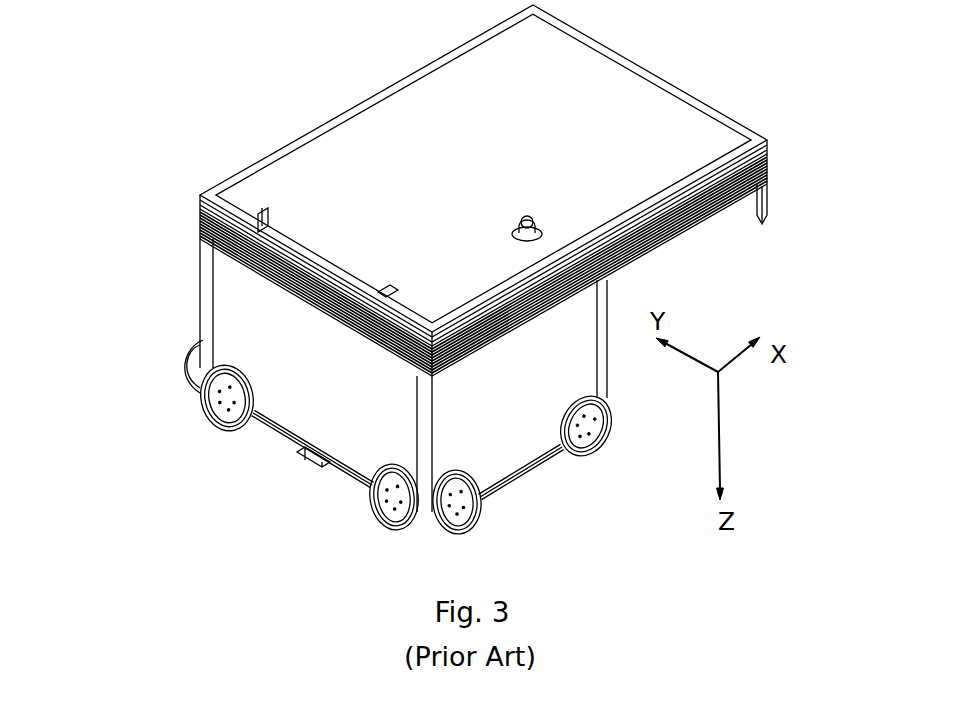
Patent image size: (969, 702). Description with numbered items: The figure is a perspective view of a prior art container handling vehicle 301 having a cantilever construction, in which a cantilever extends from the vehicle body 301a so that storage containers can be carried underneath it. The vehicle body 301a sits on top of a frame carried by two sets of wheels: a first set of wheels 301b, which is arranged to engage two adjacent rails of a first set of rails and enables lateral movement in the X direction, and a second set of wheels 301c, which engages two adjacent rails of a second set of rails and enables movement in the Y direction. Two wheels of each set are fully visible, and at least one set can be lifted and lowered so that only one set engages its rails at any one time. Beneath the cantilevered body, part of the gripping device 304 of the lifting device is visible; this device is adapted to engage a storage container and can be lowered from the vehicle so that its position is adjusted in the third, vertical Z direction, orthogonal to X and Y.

The container handling vehicle 301 is at (228, 102).
The vehicle body 301a is at (197, 212).
The first set of wheels 301b is at (552, 485).
The second set of wheels 301c is at (258, 467).
The gripping device 304 is at (773, 217).